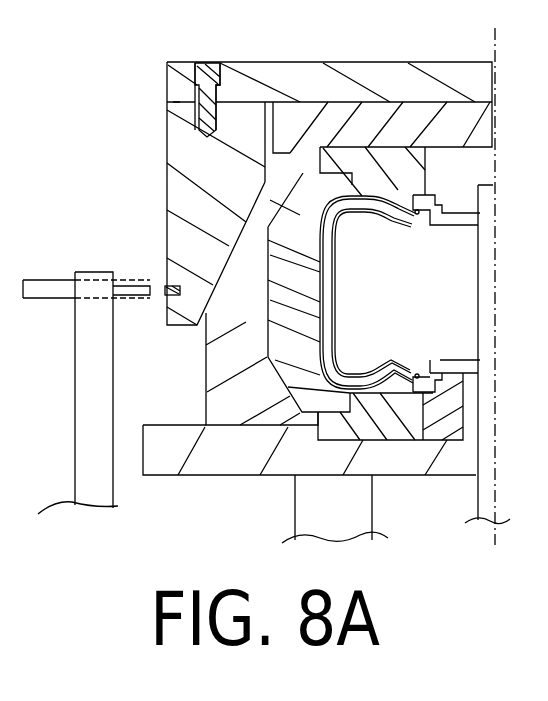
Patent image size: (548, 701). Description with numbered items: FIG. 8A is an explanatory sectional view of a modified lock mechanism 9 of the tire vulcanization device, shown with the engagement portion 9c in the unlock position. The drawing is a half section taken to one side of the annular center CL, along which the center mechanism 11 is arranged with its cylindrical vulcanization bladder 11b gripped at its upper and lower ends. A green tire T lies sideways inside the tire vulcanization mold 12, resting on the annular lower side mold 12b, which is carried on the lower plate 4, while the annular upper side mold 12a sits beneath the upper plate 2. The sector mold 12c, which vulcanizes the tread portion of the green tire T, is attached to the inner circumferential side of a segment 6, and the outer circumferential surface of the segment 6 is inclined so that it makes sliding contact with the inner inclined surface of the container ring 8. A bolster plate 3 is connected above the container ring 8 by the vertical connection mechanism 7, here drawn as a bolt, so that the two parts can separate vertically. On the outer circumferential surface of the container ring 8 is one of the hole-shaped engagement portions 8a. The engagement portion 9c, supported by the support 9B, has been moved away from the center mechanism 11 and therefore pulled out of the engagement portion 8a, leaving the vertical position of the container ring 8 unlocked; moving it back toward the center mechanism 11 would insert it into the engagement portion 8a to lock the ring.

The upper plate 2 is at (487, 130).
The bolster plate 3 is at (172, 80).
The lower plate 4 is at (243, 465).
The segment 6 is at (217, 368).
The vertical connection mechanism 7 is at (227, 76).
The container ring 8 is at (175, 147).
The engagement portion 8a is at (162, 294).
The lock mechanism 9 is at (93, 262).
The support 9B is at (82, 437).
The engagement portion 9c is at (135, 295).
The center mechanism 11 is at (489, 262).
The vulcanization bladder 11b is at (340, 362).
The tire vulcanization mold 12 is at (264, 231).
The upper side mold 12a is at (378, 150).
The lower side mold 12b is at (395, 432).
The sector mold 12c is at (312, 233).
The green tire T is at (318, 303).
The annular center CL is at (491, 301).